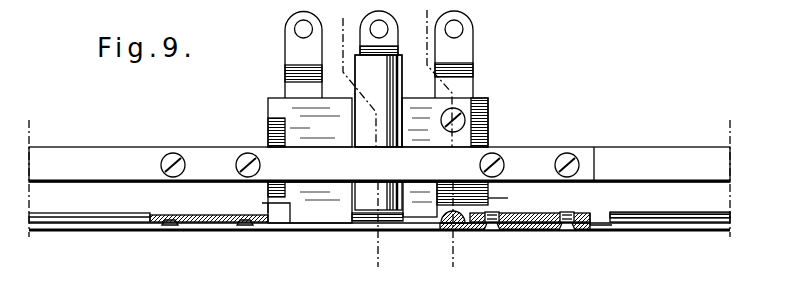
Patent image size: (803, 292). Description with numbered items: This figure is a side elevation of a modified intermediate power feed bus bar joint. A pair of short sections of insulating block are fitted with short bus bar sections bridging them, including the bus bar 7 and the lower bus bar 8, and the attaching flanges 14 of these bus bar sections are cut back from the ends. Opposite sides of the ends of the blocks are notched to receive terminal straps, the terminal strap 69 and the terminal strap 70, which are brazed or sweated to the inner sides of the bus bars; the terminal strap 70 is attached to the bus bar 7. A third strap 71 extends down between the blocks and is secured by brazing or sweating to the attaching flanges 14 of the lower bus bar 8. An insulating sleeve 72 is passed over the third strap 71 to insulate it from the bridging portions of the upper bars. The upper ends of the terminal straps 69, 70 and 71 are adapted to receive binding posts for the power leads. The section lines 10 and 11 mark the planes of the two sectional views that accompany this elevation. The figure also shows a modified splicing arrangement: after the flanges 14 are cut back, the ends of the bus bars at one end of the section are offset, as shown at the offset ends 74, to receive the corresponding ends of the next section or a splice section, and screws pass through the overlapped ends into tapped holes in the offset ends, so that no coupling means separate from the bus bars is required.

The bus bar 7 is at (80, 160).
The lower bus bar 8 is at (118, 227).
The attaching flanges 14 is at (75, 215).
The section line 10- 10 is at (343, 36).
The section line 11- 11 is at (427, 33).
The terminal strap 69 is at (297, 53).
The terminal strap 70 is at (467, 30).
The third strap 71 is at (383, 45).
The insulating sleeve 72 is at (382, 68).
The offset ends 74 is at (270, 222).